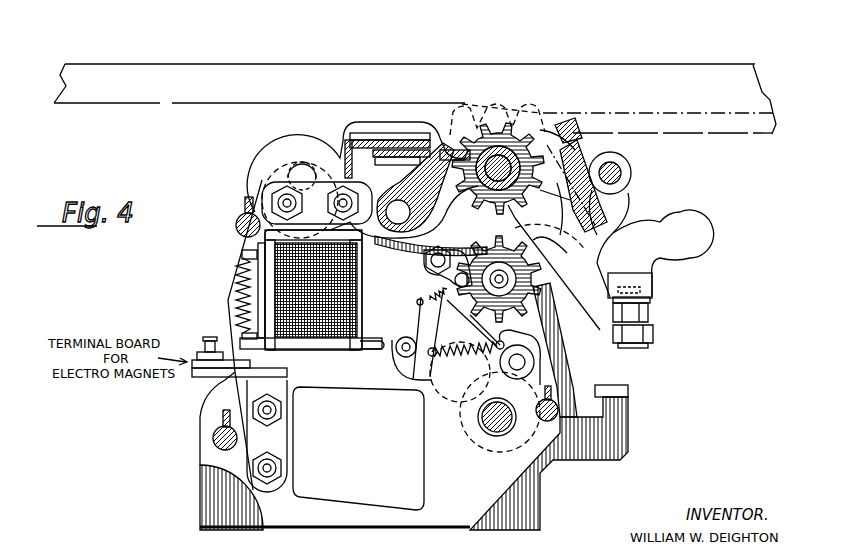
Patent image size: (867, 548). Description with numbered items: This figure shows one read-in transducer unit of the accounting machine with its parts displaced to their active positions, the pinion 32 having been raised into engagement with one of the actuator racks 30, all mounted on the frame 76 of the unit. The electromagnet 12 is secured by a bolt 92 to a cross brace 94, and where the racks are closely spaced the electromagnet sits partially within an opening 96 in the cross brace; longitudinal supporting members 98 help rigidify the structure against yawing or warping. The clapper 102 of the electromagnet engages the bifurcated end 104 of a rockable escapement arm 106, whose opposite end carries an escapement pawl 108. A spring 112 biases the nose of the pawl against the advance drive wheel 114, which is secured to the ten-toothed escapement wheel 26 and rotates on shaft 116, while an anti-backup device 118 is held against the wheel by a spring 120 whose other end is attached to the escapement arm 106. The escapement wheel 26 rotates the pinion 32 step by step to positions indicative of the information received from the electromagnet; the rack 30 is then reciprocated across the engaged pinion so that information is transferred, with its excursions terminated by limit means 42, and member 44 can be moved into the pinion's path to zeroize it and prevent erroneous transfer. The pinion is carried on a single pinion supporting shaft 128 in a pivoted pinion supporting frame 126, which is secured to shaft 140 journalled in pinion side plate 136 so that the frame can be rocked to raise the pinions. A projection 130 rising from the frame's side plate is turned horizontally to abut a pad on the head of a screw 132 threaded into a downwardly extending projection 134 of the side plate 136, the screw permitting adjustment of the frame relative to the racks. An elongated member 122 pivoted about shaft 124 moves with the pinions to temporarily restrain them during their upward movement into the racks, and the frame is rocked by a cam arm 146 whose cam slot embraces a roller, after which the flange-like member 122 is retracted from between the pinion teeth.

The rack 30 is at (238, 104).
The frame 76 is at (470, 506).
The opening 96 is at (424, 446).
The longitudinal supporting member 98 is at (236, 222).
The electromagnet 12 is at (312, 290).
The clapper 102 is at (338, 348).
The bifurcated end 104 is at (374, 352).
The cross brace 94 is at (238, 293).
The bolt 92 is at (283, 198).
The shaft 140 is at (304, 162).
The member 44 is at (427, 158).
The limit means 42 is at (415, 187).
The pinion supporting shaft 128 is at (480, 195).
The pinion 32 is at (522, 120).
The escapement wheel 26 is at (545, 282).
The elongated member 122 is at (585, 158).
The shaft 124 is at (613, 230).
The pinion supporting frame 126 is at (542, 234).
The pinion side plate 136 is at (615, 228).
The projection 134 is at (650, 278).
The screw 132 is at (647, 326).
The anti-backup device 118 is at (527, 330).
The projection 130 is at (612, 412).
The escapement pawl 108 is at (435, 266).
The spring 112 is at (428, 298).
The escapement arm 106 is at (416, 302).
The shaft 116 is at (456, 335).
The advance drive wheel 114 is at (504, 356).
The spring 120 is at (466, 364).
The cam arm 146 is at (500, 426).